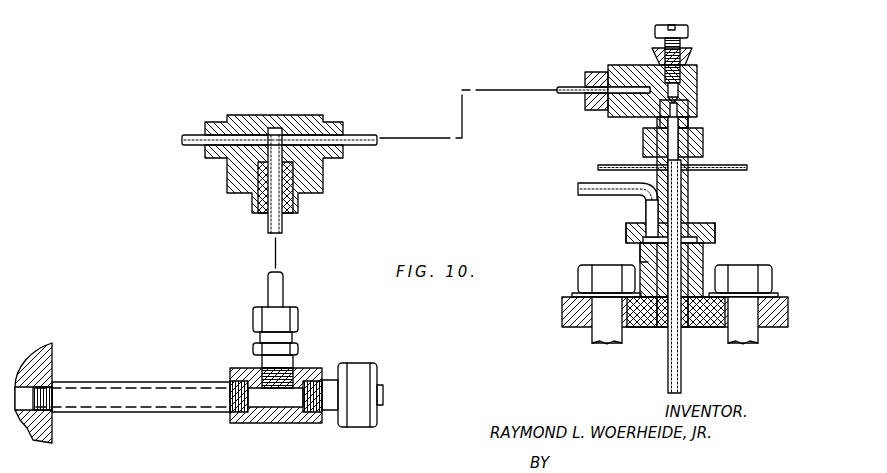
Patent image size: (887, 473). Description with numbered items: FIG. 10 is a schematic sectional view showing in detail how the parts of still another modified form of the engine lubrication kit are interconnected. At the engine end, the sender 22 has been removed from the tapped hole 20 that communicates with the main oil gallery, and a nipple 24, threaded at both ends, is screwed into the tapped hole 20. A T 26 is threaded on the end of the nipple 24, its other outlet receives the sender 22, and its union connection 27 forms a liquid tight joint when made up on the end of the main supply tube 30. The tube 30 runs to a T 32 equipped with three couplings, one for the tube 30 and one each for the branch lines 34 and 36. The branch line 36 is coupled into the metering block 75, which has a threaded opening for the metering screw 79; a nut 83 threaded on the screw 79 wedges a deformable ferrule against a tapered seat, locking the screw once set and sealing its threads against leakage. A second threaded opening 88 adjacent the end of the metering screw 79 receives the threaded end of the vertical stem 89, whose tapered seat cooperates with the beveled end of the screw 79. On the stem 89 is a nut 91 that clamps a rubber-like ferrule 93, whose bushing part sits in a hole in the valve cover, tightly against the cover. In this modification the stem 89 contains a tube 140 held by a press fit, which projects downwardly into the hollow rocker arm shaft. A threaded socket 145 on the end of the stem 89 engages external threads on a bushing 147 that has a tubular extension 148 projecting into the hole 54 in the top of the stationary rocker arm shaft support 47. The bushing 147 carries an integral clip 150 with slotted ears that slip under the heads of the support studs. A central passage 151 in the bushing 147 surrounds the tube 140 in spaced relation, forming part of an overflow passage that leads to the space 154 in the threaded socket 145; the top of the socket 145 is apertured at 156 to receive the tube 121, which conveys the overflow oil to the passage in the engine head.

The tapped hole 20 is at (51, 376).
The sender 22 is at (350, 363).
The nipple 24 is at (167, 384).
The T 26 is at (257, 425).
The union connection 27 is at (298, 325).
The main supply tube 30 is at (284, 300).
The T 32 is at (292, 116).
The branch line 34 is at (182, 134).
The branch line 36 is at (360, 133).
The stationary rocker arm shaft support 47 is at (560, 322).
The hole 54 is at (655, 322).
The metering block 75 is at (622, 65).
The metering screw 79 is at (688, 34).
The nut 83 is at (693, 58).
The threaded opening 88 is at (690, 108).
The stem 89 is at (688, 196).
The nut 91 is at (703, 146).
The ferrule 93 is at (707, 167).
The tube 121 is at (607, 198).
The tube 140 is at (696, 276).
The threaded socket 145 is at (716, 236).
The bushing 147 is at (701, 272).
The tubular extension 148 is at (689, 326).
The clip 150 is at (576, 295).
The central passage 151 is at (640, 262).
The space 154 is at (700, 224).
The aperture 156 is at (627, 233).